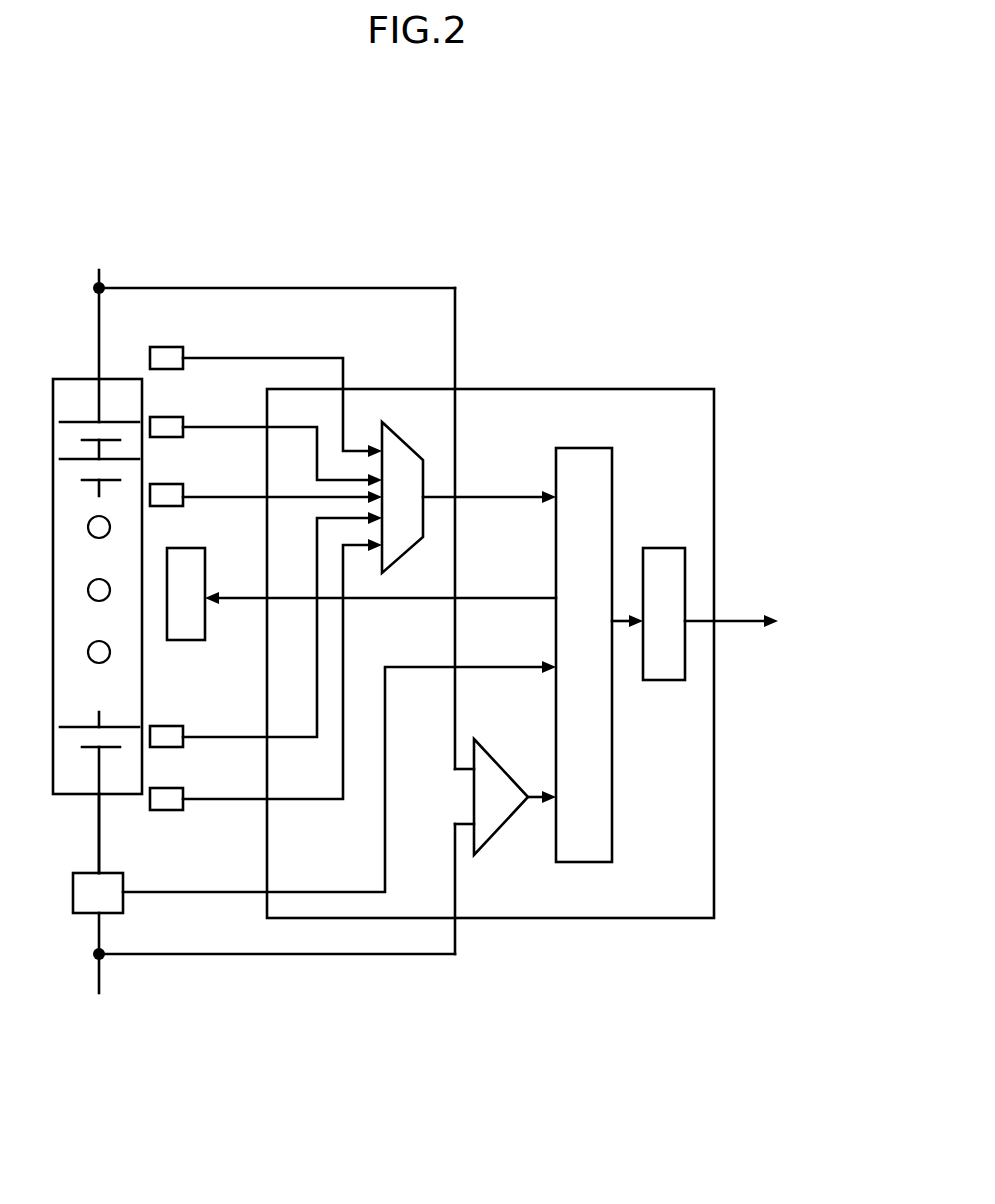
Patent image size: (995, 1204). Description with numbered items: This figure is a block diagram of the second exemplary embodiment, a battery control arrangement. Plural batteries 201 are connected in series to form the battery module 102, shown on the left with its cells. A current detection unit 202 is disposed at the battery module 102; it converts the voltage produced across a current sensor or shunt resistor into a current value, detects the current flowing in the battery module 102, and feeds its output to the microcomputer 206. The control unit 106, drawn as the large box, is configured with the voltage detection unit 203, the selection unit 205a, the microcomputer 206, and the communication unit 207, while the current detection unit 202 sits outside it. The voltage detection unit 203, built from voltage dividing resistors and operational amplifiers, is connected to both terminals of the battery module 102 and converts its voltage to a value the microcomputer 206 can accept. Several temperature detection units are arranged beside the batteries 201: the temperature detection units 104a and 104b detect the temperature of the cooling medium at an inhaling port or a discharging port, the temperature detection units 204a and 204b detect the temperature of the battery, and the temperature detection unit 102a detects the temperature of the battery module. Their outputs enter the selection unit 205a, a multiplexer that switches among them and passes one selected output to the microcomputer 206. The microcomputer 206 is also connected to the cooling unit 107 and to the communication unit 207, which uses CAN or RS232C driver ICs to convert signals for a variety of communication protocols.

The battery 201 is at (119, 418).
The temperature detection unit 104a is at (166, 347).
The temperature detection unit 204a is at (173, 417).
The temperature detection unit 102a is at (180, 484).
The cooling unit 107 is at (187, 548).
The temperature detection unit 204b is at (166, 724).
The temperature detection unit 104b is at (167, 810).
The battery module 102 is at (125, 797).
The current detection unit 202 is at (118, 914).
The selection unit 205a is at (397, 433).
The microcomputer 206 is at (575, 447).
The communication unit 207 is at (660, 548).
The voltage detection unit 203 is at (505, 825).
The control unit 106 is at (487, 919).